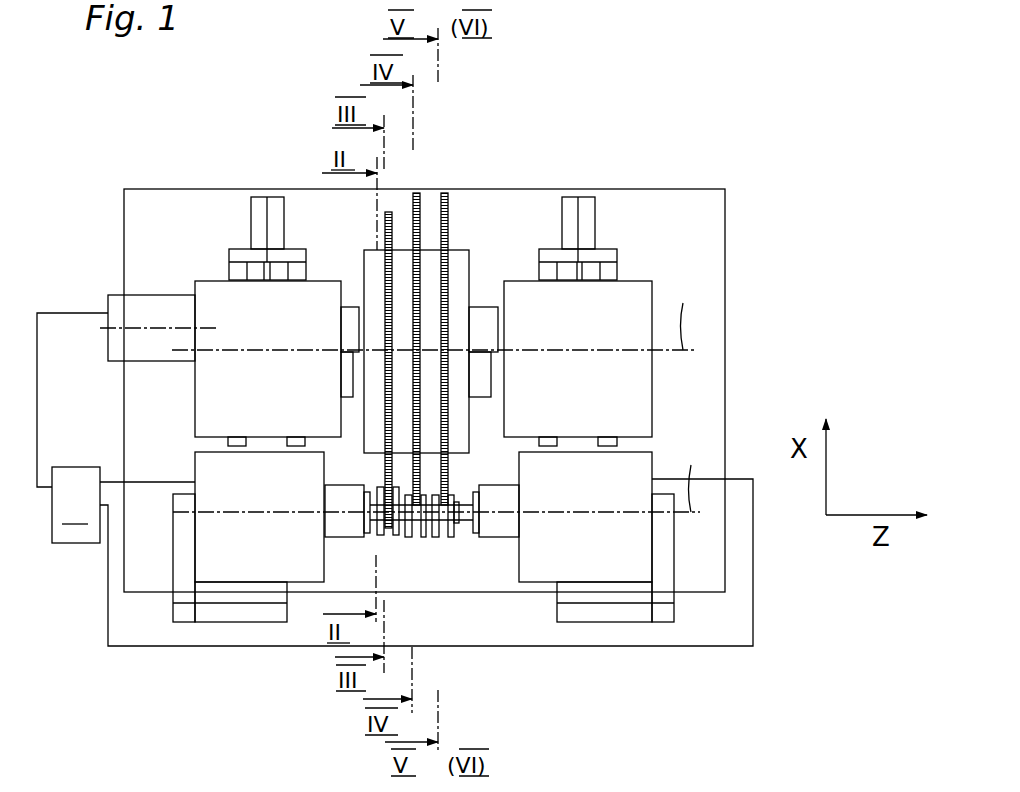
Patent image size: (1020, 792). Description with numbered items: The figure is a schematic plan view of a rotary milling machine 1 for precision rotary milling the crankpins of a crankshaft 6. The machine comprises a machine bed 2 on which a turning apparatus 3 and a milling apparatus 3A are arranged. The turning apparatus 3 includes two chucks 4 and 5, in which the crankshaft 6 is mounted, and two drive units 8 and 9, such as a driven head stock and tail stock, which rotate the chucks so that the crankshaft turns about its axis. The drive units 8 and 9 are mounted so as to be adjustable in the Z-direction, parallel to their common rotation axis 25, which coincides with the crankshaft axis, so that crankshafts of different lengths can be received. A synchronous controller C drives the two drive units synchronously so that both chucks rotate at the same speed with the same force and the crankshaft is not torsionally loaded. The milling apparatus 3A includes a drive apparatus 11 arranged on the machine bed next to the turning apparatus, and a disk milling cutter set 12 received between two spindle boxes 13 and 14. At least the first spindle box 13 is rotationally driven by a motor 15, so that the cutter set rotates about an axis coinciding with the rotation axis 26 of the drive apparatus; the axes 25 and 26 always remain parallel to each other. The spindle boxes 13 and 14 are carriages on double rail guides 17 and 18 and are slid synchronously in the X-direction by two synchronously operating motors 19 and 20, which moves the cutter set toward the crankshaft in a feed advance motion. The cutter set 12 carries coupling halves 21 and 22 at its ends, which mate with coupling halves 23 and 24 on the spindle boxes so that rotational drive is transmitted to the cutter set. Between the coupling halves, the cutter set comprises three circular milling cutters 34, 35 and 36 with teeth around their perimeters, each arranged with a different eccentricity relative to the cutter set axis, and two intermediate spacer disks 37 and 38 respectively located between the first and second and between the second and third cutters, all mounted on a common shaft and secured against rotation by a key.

The rotary milling machine 1 is at (468, 326).
The machine bed 2 is at (727, 238).
The turning apparatus 3 is at (682, 630).
The milling apparatus 3A is at (438, 306).
The chuck 4 is at (345, 540).
The chuck 5 is at (495, 540).
The crankshaft 6 is at (447, 548).
The drive unit 8 is at (217, 623).
The drive unit 9 is at (613, 623).
The drive apparatus 11 is at (108, 290).
The disk milling cutter set 12 is at (461, 306).
The first spindle box 13 is at (193, 400).
The second spindle box 14 is at (653, 377).
The motor 15 is at (110, 340).
The double rail guide 17 is at (224, 188).
The double rail guide 18 is at (618, 188).
The motor 19 is at (257, 207).
The motor 20 is at (583, 218).
The coupling half 21 is at (357, 333).
The coupling half 22 is at (484, 325).
The coupling half 23 is at (348, 375).
The coupling half 24 is at (497, 378).
The rotation axis 25 is at (699, 474).
The rotation axis 26 is at (689, 311).
The circular milling cutter 34 is at (382, 242).
The circular milling cutter 35 is at (428, 263).
The circular milling cutter 36 is at (449, 215).
The intermediate spacer disk 37 is at (400, 260).
The intermediate spacer disk 38 is at (440, 193).